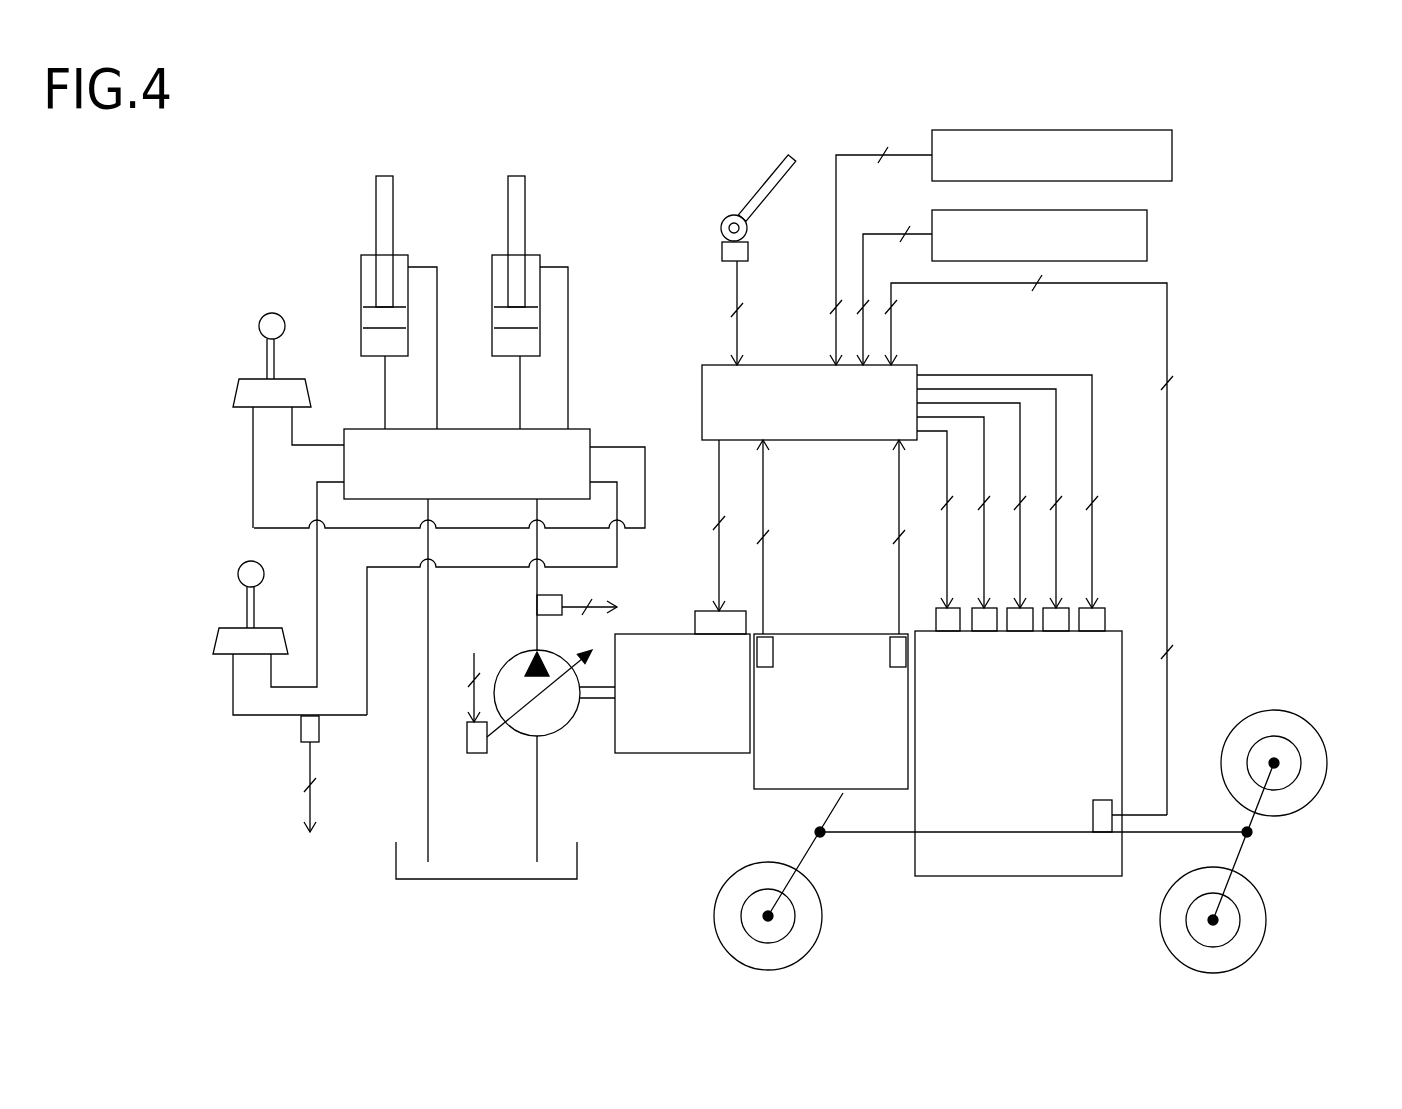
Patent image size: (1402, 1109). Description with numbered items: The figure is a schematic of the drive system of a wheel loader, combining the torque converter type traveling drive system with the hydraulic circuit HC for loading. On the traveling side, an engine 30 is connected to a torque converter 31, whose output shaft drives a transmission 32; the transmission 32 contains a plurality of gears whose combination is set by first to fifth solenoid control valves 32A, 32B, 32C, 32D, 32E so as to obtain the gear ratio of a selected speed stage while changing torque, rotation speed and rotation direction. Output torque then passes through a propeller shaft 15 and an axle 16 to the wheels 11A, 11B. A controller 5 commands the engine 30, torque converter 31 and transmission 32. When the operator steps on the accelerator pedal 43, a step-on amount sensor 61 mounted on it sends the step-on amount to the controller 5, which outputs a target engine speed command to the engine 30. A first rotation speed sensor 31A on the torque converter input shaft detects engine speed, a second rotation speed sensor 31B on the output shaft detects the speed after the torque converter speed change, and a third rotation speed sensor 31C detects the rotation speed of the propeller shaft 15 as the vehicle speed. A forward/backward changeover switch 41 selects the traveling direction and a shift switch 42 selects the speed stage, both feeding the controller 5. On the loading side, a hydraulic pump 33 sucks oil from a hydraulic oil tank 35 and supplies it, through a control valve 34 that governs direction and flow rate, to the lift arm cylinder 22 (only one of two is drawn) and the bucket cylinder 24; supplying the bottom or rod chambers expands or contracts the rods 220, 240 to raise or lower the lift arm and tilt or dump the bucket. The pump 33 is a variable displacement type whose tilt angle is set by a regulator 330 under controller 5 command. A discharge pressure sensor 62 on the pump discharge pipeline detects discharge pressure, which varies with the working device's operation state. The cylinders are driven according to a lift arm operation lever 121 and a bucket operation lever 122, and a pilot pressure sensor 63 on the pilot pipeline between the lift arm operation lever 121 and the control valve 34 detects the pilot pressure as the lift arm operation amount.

The hydraulic circuit for loading HC is at (290, 277).
The controller 5 is at (710, 365).
The wheel 11A is at (730, 932).
The wheel 11B is at (1170, 928).
The propeller shaft 15 is at (1186, 830).
The axle 16 is at (812, 857).
The lift arm cylinder 22 is at (531, 261).
The rod 220 is at (508, 220).
The bucket cylinder 24 is at (387, 257).
The rod 240 is at (375, 220).
The engine 30 is at (700, 742).
The torque converter 31 is at (790, 790).
The first rotation speed sensor 31A is at (767, 643).
The second rotation speed sensor 31B is at (895, 643).
The third rotation speed sensor 31C is at (1110, 800).
The transmission 32 is at (978, 878).
The first solenoid control valve 32A is at (950, 632).
The second solenoid control valve 32B is at (986, 632).
The third solenoid control valve 32C is at (1021, 632).
The fourth solenoid control valve 32D is at (1057, 632).
The fifth solenoid control valve 32E is at (1095, 620).
The hydraulic pump 33 is at (562, 723).
The regulator 330 is at (474, 755).
The control valve 34 is at (592, 432).
The hydraulic oil tank 35 is at (578, 865).
The forward/backward changeover switch 41 is at (1175, 150).
The shift switch 42 is at (1150, 235).
The accelerator pedal 43 is at (760, 195).
The step-on amount sensor 61 is at (722, 245).
The discharge pressure sensor 62 is at (580, 594).
The pilot pressure sensor 63 is at (300, 722).
The lift arm operation lever 121 is at (238, 625).
The bucket operation lever 122 is at (254, 380).